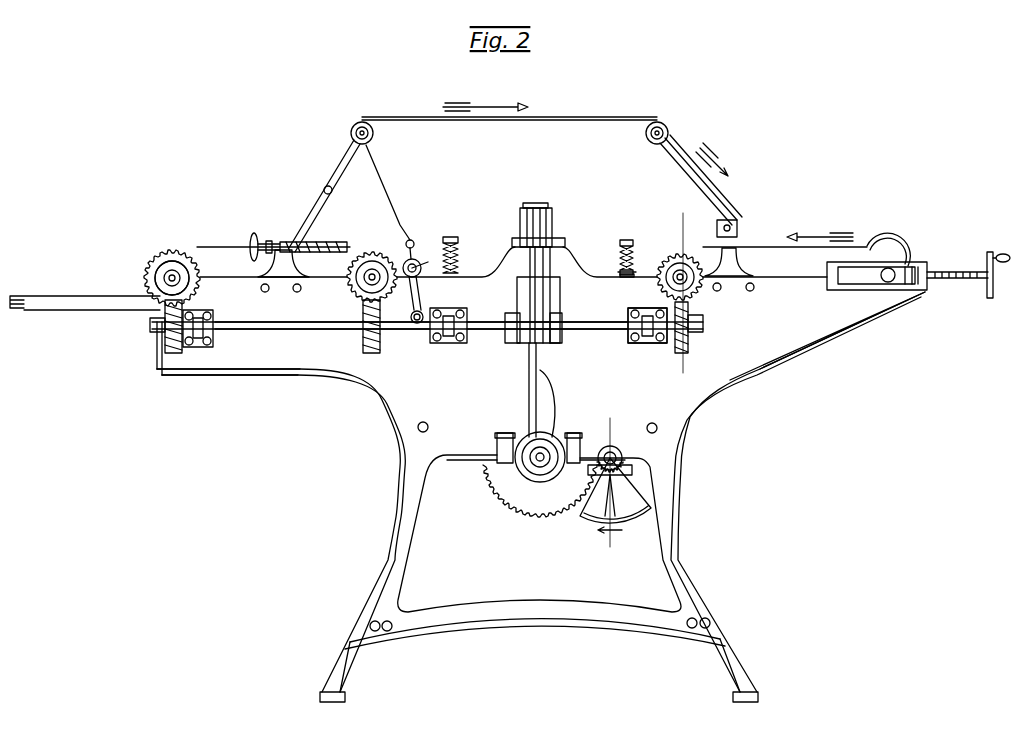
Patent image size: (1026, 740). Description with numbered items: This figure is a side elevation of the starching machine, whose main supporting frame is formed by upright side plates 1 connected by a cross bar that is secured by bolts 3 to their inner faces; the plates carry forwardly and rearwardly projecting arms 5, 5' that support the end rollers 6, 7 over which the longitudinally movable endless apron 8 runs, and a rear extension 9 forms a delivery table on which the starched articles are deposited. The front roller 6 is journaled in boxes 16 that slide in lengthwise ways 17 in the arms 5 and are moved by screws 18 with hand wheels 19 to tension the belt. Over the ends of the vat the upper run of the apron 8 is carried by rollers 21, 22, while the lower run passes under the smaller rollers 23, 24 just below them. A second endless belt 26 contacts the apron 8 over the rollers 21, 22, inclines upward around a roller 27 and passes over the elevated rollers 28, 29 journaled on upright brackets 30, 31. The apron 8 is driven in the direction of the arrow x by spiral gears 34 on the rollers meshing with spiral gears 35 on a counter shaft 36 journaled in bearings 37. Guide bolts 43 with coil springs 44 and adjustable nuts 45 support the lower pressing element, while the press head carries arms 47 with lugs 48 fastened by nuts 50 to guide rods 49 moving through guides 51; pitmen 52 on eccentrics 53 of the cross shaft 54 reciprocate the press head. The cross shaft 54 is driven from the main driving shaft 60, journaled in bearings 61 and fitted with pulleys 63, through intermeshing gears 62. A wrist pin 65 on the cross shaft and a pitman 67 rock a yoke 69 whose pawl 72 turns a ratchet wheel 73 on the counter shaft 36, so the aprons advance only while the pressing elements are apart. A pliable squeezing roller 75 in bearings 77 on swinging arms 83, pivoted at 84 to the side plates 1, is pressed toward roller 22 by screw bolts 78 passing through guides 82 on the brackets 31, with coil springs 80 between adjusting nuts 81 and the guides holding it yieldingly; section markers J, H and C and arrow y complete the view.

The side plate 1 is at (705, 408).
The bolt 3 is at (418, 428).
The forwardly projecting arm 5 is at (827, 336).
The rearwardly projecting arm 5' is at (228, 388).
The front end roller 6 is at (893, 252).
The rear end roller 7 is at (158, 262).
The endless apron 8 is at (200, 250).
The delivery table 9 is at (60, 296).
The box 16 is at (880, 283).
The way 17 is at (845, 282).
The screw 18 is at (950, 272).
The hand wheel 19 is at (990, 252).
The roller 21 is at (682, 265).
The roller 22 is at (371, 270).
The roller 23 is at (660, 343).
The roller 24 is at (330, 331).
The endless belt 26 is at (570, 118).
The roller 27 is at (738, 228).
The roller 28 is at (662, 125).
The roller 29 is at (356, 124).
The upright bracket 30 is at (690, 165).
The upright bracket 31 is at (340, 163).
The spiral gear 34 is at (150, 276).
The spiral gear 35 is at (165, 345).
The counter shaft 36 is at (290, 322).
The bearing 37 is at (200, 315).
The guide bolt 43 is at (640, 271).
The coil spring 44 is at (620, 260).
The adjustable nut 45 is at (450, 237).
The arm 47 is at (565, 245).
The lug 48 is at (520, 228).
The guide rod 49 is at (533, 262).
The nut 50 is at (548, 208).
The guide 51 is at (560, 298).
The pitman 52 is at (553, 385).
The eccentric 53 is at (556, 432).
The cross shaft 54 is at (542, 468).
The main driving shaft 60 is at (613, 454).
The bearing 61 is at (626, 454).
The gear 62 is at (590, 480).
The pulley 63 is at (634, 520).
The wrist pin 65 is at (522, 462).
The pitman 67 is at (528, 418).
The rock arm 69 is at (555, 343).
The pawl 72 is at (512, 343).
The ratchet wheel 73 is at (550, 318).
The squeezing roller 75 is at (413, 244).
The bearing 77 is at (428, 262).
The screw bolt 78 is at (335, 247).
The coil spring 80 is at (276, 243).
The adjusting nut 81 is at (250, 240).
The guide 82 is at (290, 252).
The swinging arm 83 is at (412, 300).
The pivot 84 is at (415, 323).
The section line J is at (413, 281).
The section line H is at (683, 290).
The section line C is at (610, 478).
The arrow X x is at (820, 225).
The direction arrow y is at (722, 159).